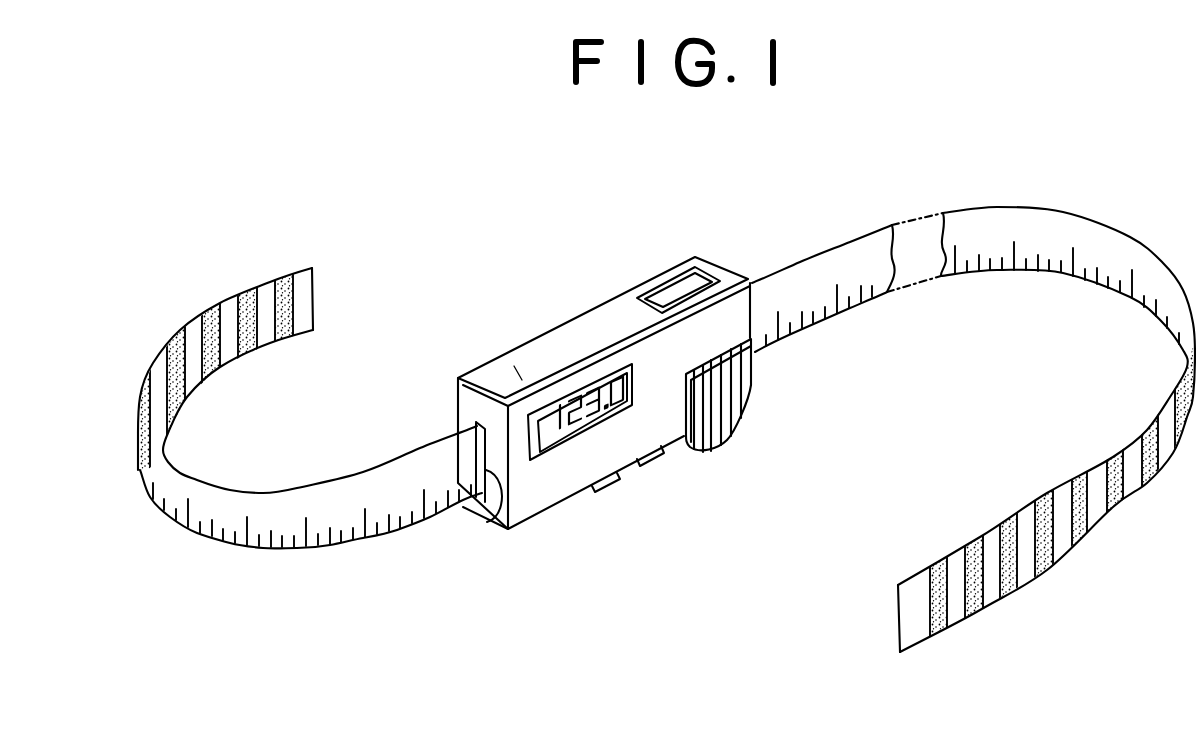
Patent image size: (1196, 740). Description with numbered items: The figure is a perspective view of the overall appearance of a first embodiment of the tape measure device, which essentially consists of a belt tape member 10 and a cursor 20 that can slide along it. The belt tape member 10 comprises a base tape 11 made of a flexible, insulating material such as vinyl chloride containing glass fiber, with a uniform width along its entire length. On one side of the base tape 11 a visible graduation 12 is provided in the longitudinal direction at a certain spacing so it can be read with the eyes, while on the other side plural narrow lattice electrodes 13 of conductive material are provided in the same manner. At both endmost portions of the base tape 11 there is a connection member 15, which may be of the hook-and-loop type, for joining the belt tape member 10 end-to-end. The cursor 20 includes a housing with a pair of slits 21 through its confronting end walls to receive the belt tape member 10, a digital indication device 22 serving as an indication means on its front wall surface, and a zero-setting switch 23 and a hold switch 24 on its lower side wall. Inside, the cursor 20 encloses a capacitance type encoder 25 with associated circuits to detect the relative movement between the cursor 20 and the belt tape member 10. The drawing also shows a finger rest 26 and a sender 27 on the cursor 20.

The belt tape member 10 is at (666, 395).
The base tape 11 is at (1105, 242).
The visible graduation 12 is at (235, 540).
The lattice electrodes 13 is at (273, 282).
The connection member 15 is at (312, 286).
The cursor 20 is at (557, 347).
The slits 21 is at (494, 478).
The digital indication device 22 is at (550, 454).
The zero-setting switch 23 is at (607, 488).
The hold switch 24 is at (655, 457).
The capacitance type encoder 25 is at (518, 375).
The finger rest 26 is at (752, 425).
The sender 27 is at (665, 282).